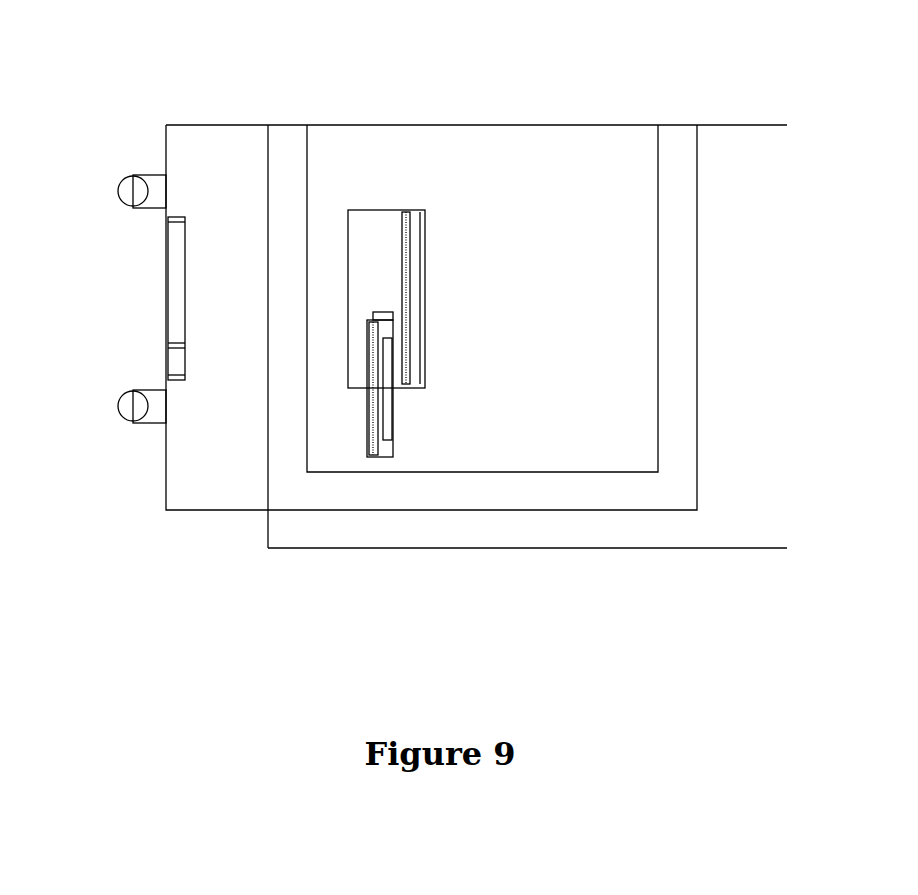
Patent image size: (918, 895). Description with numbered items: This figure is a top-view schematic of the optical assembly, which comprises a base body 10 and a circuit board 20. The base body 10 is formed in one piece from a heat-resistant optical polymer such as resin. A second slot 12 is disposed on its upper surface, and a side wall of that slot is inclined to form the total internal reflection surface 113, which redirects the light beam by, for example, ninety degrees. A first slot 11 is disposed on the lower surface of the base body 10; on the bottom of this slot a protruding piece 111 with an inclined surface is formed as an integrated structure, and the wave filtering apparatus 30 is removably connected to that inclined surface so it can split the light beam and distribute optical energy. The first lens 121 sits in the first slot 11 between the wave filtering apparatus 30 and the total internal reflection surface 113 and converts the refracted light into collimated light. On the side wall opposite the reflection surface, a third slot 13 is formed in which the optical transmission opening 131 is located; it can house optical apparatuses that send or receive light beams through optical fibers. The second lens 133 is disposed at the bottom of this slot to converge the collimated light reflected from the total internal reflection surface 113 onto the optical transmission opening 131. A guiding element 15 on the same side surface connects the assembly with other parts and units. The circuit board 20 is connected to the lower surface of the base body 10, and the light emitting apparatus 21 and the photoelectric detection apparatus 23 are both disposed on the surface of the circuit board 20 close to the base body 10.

The base body 10 is at (668, 146).
The first slot 11 is at (417, 293).
The second slot 12 is at (618, 440).
The third slot 13 is at (172, 273).
The guiding element 15 is at (146, 186).
The circuit board 20 is at (712, 533).
The light emitting apparatus 21 is at (383, 330).
The photoelectric detection apparatus 23 is at (375, 395).
The wave filtering apparatus 30 is at (395, 440).
The protruding piece 111 is at (380, 455).
The total internal reflection surface 113 is at (374, 235).
The first lens 121 is at (380, 330).
The optical transmission opening 131 is at (166, 348).
The second lens 133 is at (185, 344).